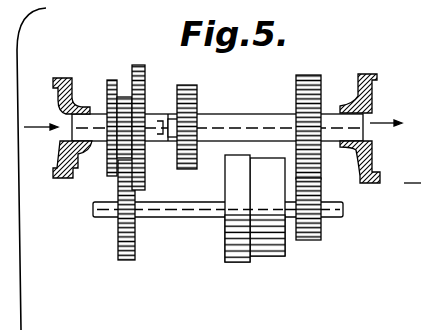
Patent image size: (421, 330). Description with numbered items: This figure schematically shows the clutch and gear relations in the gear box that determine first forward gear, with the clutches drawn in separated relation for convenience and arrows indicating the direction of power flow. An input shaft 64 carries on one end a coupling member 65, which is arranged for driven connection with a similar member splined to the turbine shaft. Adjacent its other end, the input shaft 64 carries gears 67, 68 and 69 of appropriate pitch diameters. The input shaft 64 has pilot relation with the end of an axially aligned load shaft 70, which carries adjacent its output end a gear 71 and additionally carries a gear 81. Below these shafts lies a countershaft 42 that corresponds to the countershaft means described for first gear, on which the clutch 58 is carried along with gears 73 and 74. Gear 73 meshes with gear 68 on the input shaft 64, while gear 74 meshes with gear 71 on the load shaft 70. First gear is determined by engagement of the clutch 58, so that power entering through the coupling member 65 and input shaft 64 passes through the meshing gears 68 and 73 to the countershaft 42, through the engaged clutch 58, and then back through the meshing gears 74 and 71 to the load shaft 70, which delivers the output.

The countershaft 42 is at (180, 217).
The clutch 58 is at (263, 256).
The input shaft 64 is at (99, 146).
The coupling member 65 is at (64, 74).
The gear 67 is at (109, 80).
The gear 68 is at (123, 97).
The gear 69 is at (135, 65).
The load shaft 70 is at (213, 114).
The gear 71 is at (310, 75).
The gear 73 is at (125, 261).
The gear 74 is at (312, 240).
The gear 81 is at (188, 169).